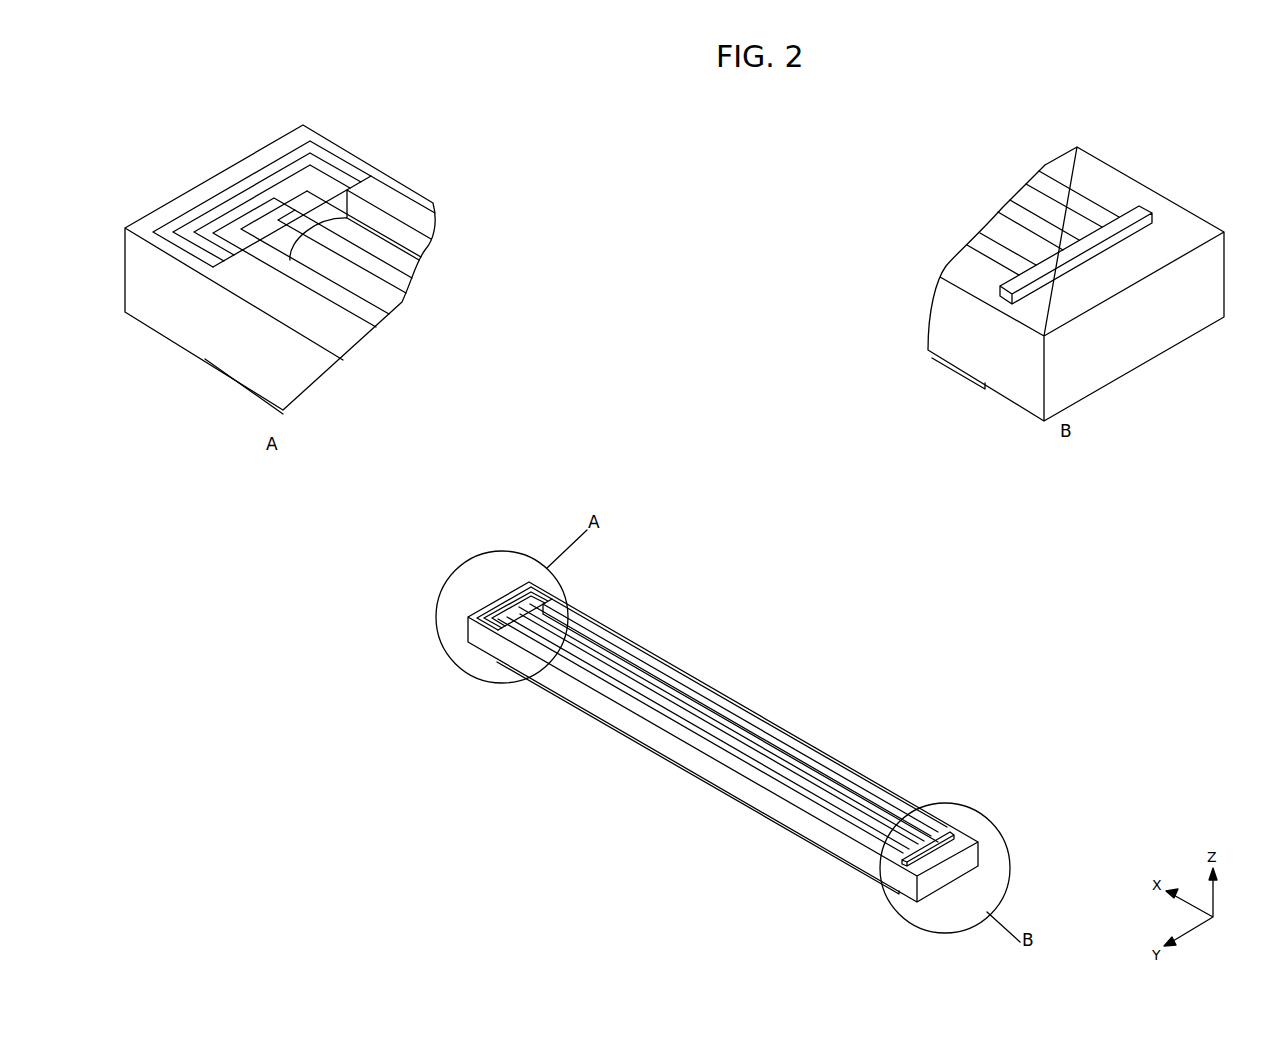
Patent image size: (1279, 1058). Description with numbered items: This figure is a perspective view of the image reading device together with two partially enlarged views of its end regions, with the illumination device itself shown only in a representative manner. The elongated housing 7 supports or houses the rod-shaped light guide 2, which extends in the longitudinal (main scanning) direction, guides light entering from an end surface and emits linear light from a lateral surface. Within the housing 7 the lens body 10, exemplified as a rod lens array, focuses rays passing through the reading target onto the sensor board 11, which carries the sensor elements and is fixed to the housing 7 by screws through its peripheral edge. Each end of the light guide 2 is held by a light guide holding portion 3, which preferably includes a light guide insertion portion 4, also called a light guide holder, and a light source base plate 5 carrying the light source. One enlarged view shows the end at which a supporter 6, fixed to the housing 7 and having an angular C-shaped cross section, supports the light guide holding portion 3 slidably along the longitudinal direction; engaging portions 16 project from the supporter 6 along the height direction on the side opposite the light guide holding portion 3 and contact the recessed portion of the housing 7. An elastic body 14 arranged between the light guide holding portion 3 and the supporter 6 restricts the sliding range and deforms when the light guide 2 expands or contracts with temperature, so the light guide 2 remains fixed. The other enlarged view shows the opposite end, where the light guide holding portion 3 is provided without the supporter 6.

The light guide 2 is at (372, 260).
The light guide holding portion 3 is at (1105, 233).
The light guide insertion portion 4 is at (253, 232).
The light source base plate 5 is at (267, 207).
The supporter 6 is at (340, 160).
The housing 7 is at (280, 370).
The lens body 10 is at (362, 280).
The sensor board 11 is at (212, 367).
The elastic body 14 is at (293, 182).
The engaging portions 16 is at (333, 177).